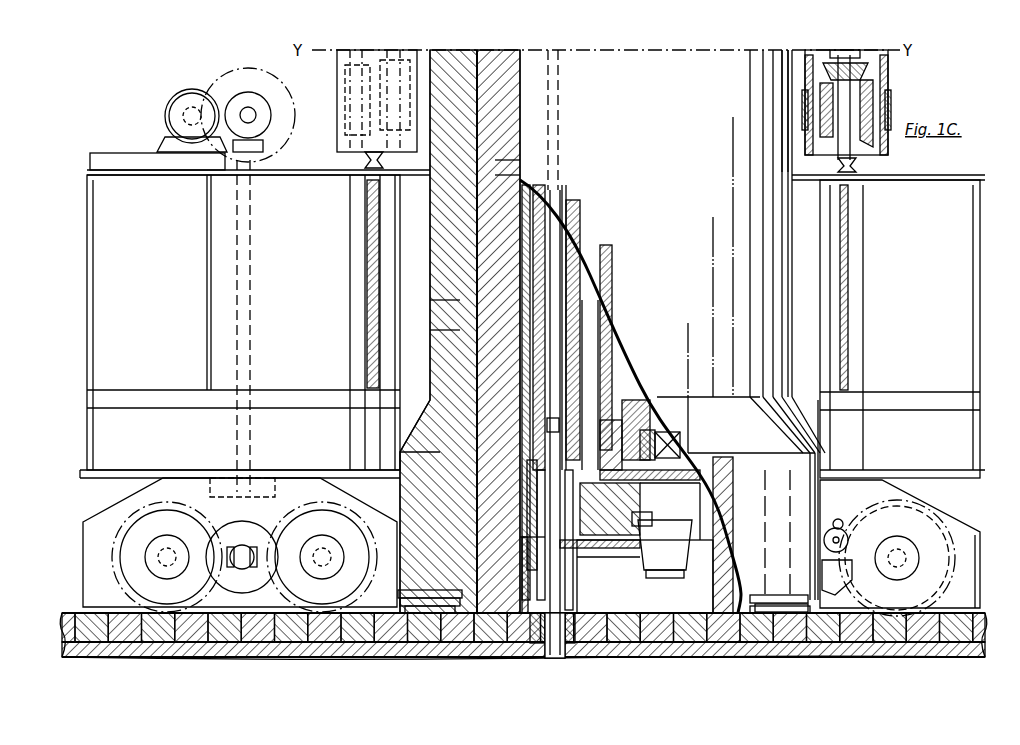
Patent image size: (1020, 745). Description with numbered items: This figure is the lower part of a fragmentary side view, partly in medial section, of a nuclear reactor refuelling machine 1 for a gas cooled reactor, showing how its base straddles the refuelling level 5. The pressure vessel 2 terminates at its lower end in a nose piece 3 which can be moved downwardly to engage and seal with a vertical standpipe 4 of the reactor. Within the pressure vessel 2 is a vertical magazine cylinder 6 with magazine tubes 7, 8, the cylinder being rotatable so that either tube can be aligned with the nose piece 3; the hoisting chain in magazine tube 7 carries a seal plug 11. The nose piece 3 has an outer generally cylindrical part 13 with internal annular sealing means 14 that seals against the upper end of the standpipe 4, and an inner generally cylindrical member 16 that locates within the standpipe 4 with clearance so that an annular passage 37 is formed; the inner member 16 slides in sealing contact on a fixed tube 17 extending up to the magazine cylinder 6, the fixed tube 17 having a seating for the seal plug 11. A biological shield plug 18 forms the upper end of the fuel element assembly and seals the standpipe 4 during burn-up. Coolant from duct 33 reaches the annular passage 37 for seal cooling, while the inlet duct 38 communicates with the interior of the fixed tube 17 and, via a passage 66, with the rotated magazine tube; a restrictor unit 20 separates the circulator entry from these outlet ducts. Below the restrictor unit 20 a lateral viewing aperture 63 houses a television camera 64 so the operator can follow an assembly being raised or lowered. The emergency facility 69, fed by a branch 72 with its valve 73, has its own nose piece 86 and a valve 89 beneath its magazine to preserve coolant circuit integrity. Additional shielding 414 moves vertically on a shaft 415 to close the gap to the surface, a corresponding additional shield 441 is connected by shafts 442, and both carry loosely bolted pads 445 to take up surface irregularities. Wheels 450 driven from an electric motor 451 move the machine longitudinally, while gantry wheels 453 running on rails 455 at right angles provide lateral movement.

The refuelling machine 1 is at (980, 214).
The pressure vessel 2 is at (540, 212).
The nose piece 3 is at (585, 568).
The standpipe 4 is at (563, 650).
The refuelling level 5 is at (688, 612).
The magazine cylinder 6 is at (574, 247).
The magazine tube 7 is at (566, 220).
The magazine tube 8 is at (586, 290).
The seal plug 11 is at (545, 558).
The outer cylindrical part 13 is at (538, 586).
The annular sealing means 14 is at (540, 628).
The inner cylindrical member 16 is at (573, 600).
The fixed tube 17 is at (584, 513).
The biological shield plug 18 is at (572, 640).
The restrictor unit 20 is at (580, 345).
The duct 33 is at (508, 490).
The annular passage 37 is at (540, 608).
The inlet duct 38 is at (547, 425).
The lateral viewing aperture 63 is at (610, 428).
The television camera 64 is at (625, 440).
The passage 66 is at (594, 418).
The emergency facility 69 is at (650, 576).
The branch 72 is at (660, 478).
The valve 73 is at (628, 453).
The nose piece 86 is at (658, 582).
The valve 89 is at (681, 447).
The additional shielding 414 is at (808, 602).
The shaft 415 is at (783, 598).
The additional shield 441 is at (405, 606).
The shafts 442 is at (445, 606).
The pads 445 is at (425, 613).
The wheels 450 is at (120, 548).
The electric motor 451 is at (176, 104).
The wheels 453 is at (385, 107).
The rails 455 is at (383, 156).